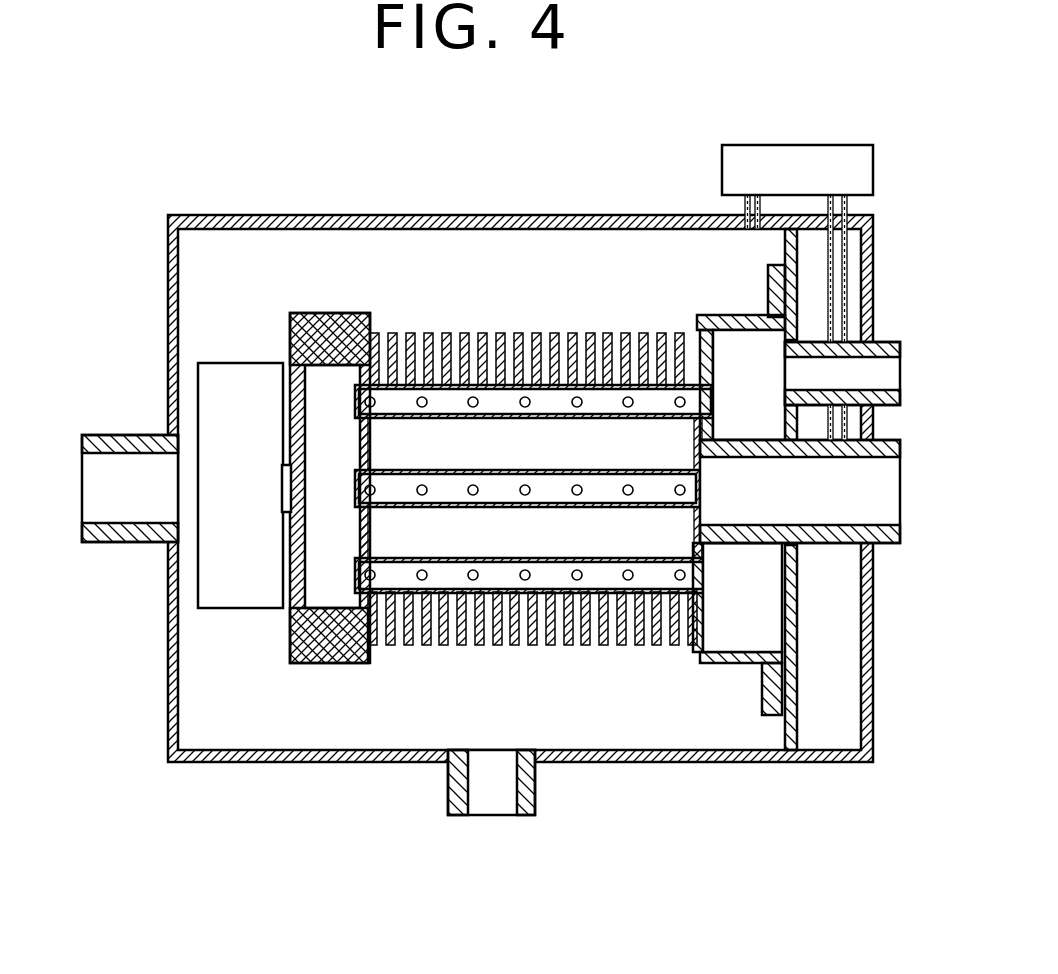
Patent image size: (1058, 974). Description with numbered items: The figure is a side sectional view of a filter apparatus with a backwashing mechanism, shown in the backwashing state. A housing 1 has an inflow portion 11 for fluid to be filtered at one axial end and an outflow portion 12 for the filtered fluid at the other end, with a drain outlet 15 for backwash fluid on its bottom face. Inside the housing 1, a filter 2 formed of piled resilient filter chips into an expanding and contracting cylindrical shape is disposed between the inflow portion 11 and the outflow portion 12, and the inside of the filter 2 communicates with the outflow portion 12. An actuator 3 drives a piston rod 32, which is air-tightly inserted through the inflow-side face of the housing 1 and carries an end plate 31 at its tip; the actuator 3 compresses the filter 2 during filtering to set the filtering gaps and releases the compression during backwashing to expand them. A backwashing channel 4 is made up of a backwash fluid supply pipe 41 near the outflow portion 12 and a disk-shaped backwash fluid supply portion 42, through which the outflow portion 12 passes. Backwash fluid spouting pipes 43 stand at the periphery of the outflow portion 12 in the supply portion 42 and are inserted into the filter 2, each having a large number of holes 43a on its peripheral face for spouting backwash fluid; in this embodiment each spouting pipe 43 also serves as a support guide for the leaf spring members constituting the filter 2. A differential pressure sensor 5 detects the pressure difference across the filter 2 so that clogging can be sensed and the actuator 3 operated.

The housing 1 is at (515, 212).
The inflow portion 11 is at (133, 537).
The outflow portion 12 is at (888, 545).
The drain outlet 15 is at (450, 795).
The filter 2 is at (625, 659).
The actuator 3 is at (245, 362).
The end plate 31 is at (332, 313).
The piston rod 32 is at (283, 492).
The backwashing channel 4 is at (931, 265).
The backwash fluid supply pipe 41 is at (893, 352).
The backwash fluid supply portion 42 is at (783, 317).
The backwash fluid spouting pipe 43 is at (598, 385).
The holes 43a is at (527, 407).
The differential pressure sensor 5 is at (801, 132).